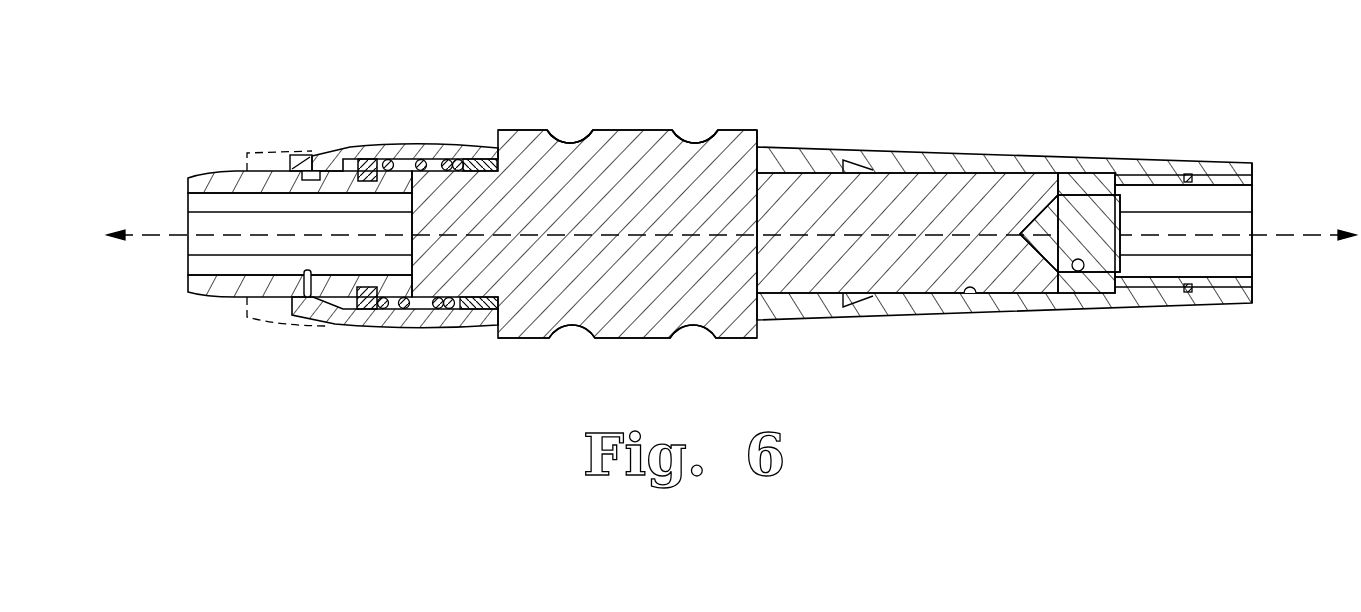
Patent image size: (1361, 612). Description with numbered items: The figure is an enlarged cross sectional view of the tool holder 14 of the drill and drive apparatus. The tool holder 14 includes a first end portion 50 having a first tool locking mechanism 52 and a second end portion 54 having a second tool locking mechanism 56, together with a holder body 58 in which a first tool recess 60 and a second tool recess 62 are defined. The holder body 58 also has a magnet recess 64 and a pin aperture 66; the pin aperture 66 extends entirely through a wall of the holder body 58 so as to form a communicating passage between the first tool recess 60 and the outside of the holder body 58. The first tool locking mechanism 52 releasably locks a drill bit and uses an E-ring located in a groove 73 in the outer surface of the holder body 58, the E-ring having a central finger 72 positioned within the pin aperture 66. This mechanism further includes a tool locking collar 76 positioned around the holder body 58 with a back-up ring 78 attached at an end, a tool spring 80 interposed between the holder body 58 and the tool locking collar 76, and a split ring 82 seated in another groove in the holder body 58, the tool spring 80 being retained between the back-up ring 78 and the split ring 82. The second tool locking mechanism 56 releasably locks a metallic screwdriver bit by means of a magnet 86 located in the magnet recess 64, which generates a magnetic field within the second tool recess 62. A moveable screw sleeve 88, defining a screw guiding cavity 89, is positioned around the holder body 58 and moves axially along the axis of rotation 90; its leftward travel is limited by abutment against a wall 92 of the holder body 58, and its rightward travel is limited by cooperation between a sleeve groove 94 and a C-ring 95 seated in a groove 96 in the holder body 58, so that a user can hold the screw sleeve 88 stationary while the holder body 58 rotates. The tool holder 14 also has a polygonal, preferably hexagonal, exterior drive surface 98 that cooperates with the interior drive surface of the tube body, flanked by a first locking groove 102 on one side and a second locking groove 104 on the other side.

The tool holder 14 is at (836, 110).
The first end portion 50 is at (253, 126).
The first tool locking mechanism 52 is at (338, 344).
The second end portion 54 is at (1041, 228).
The second tool locking mechanism 56 is at (1141, 270).
The holder body 58 is at (920, 275).
The first tool recess 60 is at (190, 270).
The second tool recess 62 is at (1253, 275).
The magnet recess 64 is at (1079, 272).
The pin aperture 66 is at (305, 280).
The central finger 72 is at (362, 289).
The groove 73 is at (299, 158).
The tool locking collar 76 is at (262, 312).
The back-up ring 78 is at (484, 150).
The tool spring 80 is at (430, 159).
The split ring 82 is at (366, 159).
The magnet 86 is at (1095, 194).
The screw sleeve 88 is at (1000, 158).
The screw guiding cavity 89 is at (971, 300).
The axis of rotation 90 is at (640, 237).
The wall 92 is at (765, 140).
The sleeve groove 94 is at (848, 302).
The C-ring 95 is at (1192, 173).
The groove 96 is at (1191, 293).
The exterior drive surface 98 is at (621, 130).
The first locking groove 102 is at (561, 130).
The second locking groove 104 is at (694, 128).